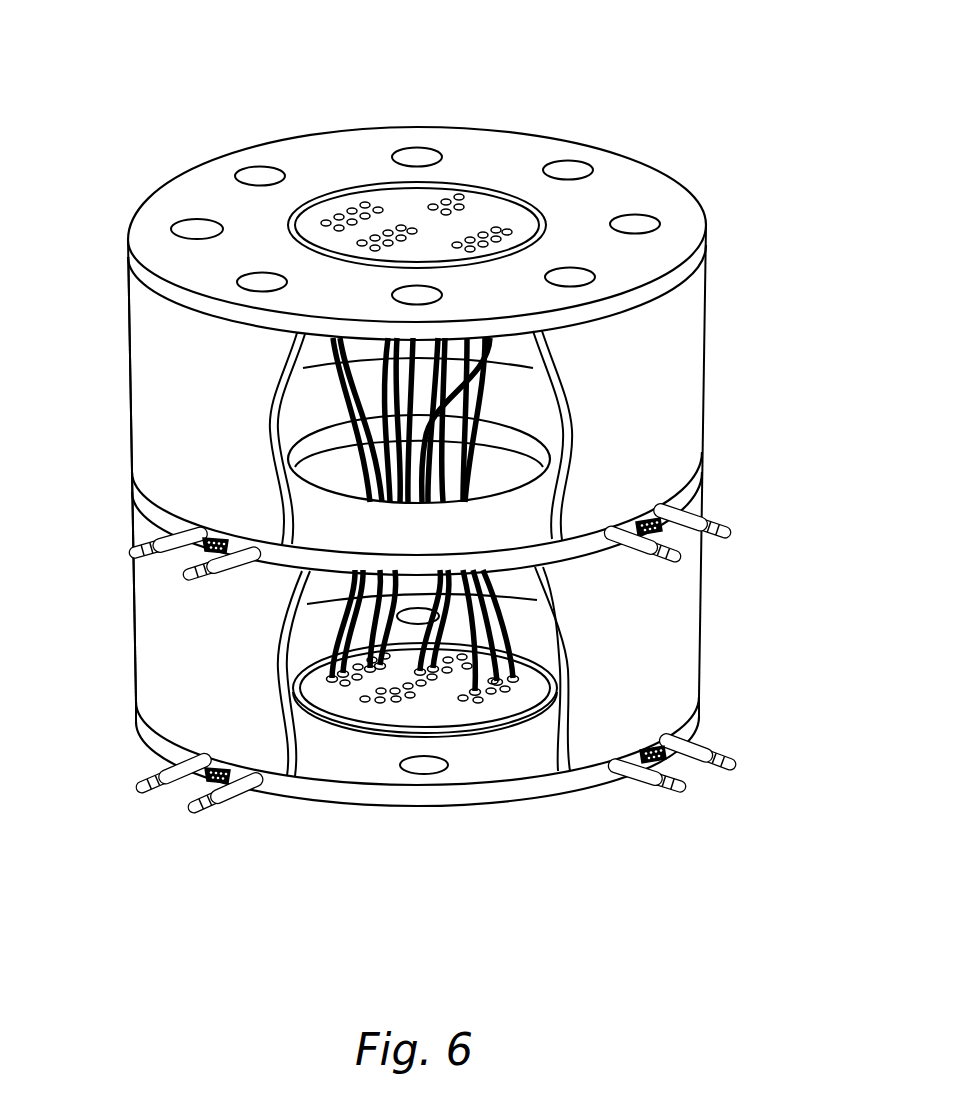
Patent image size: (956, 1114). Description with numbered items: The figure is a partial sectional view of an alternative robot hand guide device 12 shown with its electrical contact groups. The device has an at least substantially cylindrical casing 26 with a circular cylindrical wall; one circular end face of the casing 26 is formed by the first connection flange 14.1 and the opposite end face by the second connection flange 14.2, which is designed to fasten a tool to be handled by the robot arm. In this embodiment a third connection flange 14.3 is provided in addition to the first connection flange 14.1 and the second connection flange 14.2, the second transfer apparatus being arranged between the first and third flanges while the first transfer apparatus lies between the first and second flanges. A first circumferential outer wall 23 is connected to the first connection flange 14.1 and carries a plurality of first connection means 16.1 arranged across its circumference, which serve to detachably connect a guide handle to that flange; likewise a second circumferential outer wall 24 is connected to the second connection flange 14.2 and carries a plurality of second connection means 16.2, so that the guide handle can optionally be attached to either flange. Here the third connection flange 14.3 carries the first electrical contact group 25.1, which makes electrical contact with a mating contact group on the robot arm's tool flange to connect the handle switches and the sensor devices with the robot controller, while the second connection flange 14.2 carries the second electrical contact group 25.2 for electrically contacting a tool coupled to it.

The robot hand guide device 12 is at (244, 118).
The cylindrical casing 26 is at (108, 294).
The third connection flange 14.3 is at (665, 197).
The first electrical contact group 25.1 is at (482, 203).
The first circumferential outer wall 23 is at (150, 386).
The first connection flange 14.1 is at (703, 487).
The second circumferential outer wall 24 is at (147, 616).
The second electrical contact group 25.2 is at (432, 712).
The second connection flange 14.2 is at (700, 712).
The first connection means 16.1 is at (115, 548).
The second connection means 16.2 is at (150, 801).